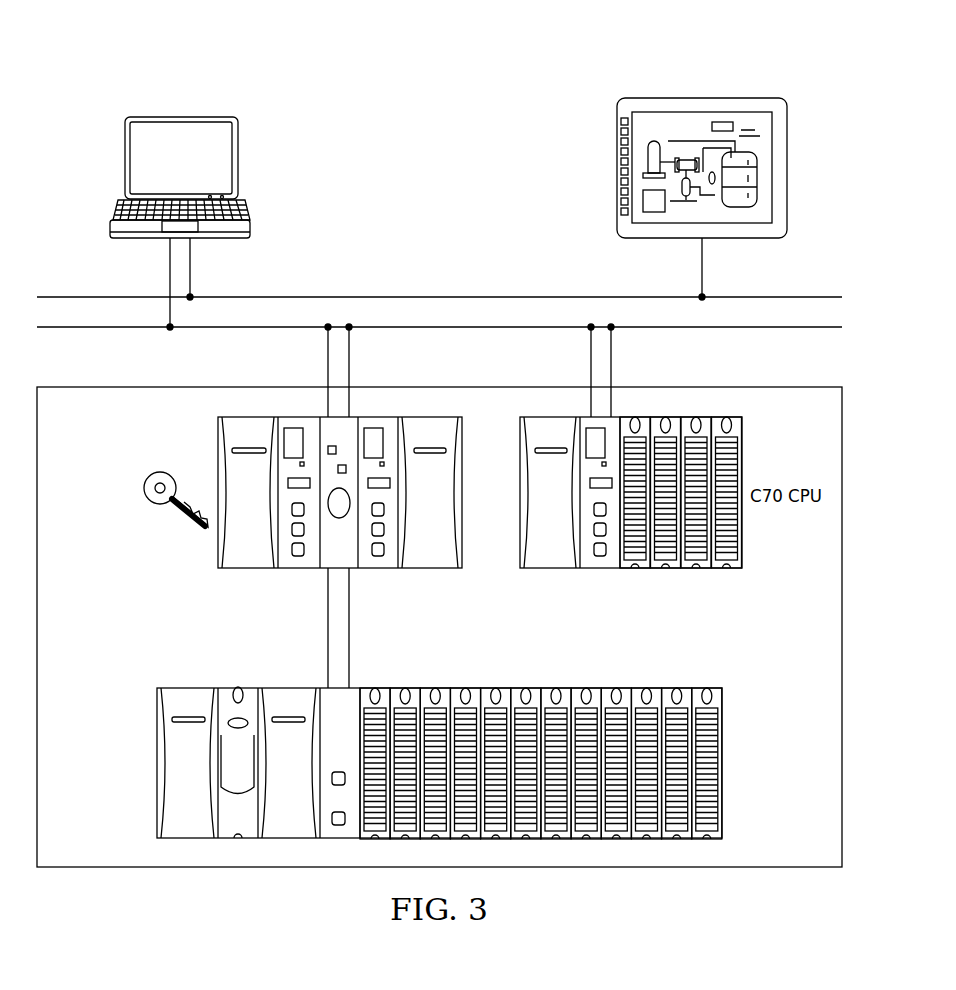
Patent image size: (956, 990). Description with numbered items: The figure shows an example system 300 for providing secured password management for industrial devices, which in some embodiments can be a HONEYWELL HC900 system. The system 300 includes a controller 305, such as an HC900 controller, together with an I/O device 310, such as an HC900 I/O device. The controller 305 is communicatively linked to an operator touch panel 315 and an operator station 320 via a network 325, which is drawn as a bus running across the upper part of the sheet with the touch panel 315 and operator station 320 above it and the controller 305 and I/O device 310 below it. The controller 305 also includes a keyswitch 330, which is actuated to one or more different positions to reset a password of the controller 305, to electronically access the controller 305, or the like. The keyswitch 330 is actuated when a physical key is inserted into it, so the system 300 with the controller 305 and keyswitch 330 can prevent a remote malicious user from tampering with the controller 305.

The system 300 is at (550, 73).
The controller 305 is at (157, 763).
The I/O device 310 is at (218, 460).
The operator touch panel 315 is at (789, 167).
The operator station 320 is at (122, 160).
The network 325 is at (550, 297).
The keyswitch 330 is at (339, 507).